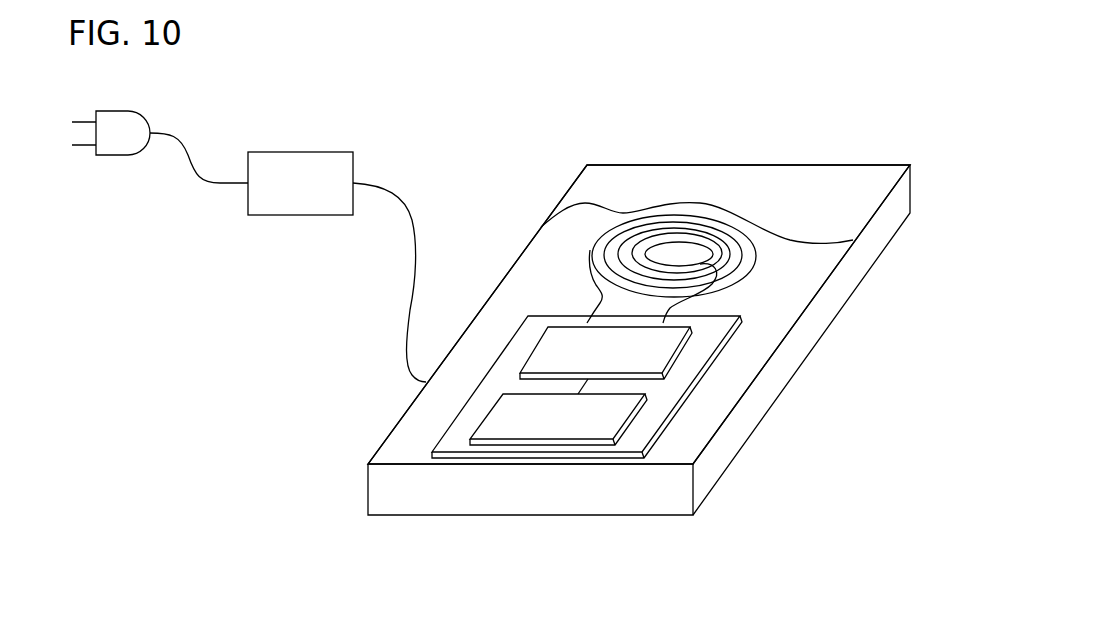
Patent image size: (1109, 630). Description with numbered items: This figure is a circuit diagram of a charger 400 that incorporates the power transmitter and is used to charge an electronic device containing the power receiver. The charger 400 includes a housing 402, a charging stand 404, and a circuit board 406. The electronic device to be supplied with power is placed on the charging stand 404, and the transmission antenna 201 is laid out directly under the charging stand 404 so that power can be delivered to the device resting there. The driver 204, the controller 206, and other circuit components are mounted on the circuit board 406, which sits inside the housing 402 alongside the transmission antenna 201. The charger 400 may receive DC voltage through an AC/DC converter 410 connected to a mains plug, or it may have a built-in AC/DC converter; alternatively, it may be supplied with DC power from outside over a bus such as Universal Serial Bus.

The charger 400 is at (550, 497).
The housing 402 is at (900, 202).
The charging stand 404 is at (625, 207).
The transmission antenna 201 is at (757, 257).
The circuit board 406 is at (717, 329).
The driver 204 is at (653, 359).
The controller 206 is at (622, 409).
The AC/DC converter 410 is at (300, 215).